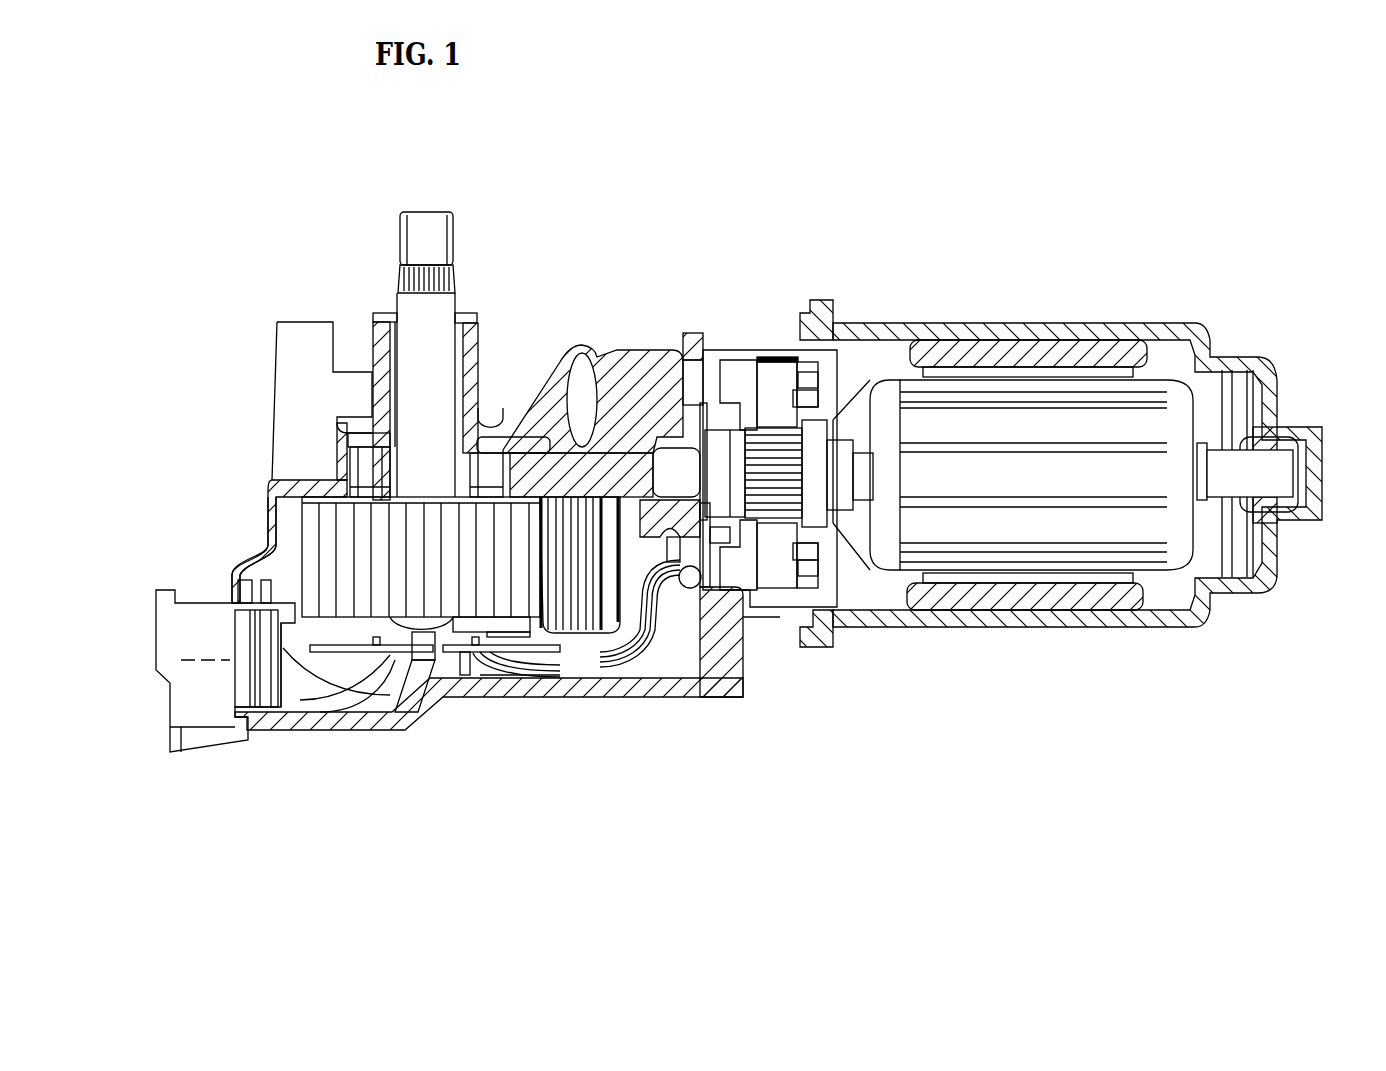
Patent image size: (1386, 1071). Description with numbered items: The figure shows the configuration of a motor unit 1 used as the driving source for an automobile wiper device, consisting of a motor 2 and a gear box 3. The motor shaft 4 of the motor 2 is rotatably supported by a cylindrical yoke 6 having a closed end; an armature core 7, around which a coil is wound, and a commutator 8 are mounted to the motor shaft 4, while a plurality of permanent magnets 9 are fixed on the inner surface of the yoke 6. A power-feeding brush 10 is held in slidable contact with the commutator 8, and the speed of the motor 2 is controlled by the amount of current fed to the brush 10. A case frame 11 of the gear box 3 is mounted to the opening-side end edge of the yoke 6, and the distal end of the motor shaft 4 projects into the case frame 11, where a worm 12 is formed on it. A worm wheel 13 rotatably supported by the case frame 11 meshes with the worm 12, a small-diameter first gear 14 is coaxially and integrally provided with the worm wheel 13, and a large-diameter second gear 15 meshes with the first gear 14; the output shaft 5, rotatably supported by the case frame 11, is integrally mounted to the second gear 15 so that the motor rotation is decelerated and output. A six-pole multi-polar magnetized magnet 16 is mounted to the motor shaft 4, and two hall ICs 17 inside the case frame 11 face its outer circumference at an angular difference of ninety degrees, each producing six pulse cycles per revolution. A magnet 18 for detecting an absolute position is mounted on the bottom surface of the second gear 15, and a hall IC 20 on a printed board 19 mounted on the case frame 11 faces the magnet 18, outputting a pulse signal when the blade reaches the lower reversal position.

The motor unit 1 is at (861, 268).
The motor 2 is at (1068, 320).
The gear box 3 is at (555, 350).
The motor shaft 4 is at (1218, 487).
The output shaft 5 is at (420, 305).
The yoke 6 is at (942, 322).
The armature core 7 is at (1075, 525).
The commutator 8 is at (795, 492).
The permanent magnets 9 is at (998, 595).
The brush 10 is at (773, 410).
The case frame 11 is at (714, 442).
The worm 12 is at (488, 470).
The worm wheel 13 is at (560, 350).
The first gear 14 is at (588, 612).
The second gear 15 is at (353, 543).
The multi-polar magnetized magnet 16 is at (723, 405).
The hall ICs 17 is at (700, 598).
The magnet for detecting an absolute position 18 is at (480, 655).
The printed board 19 is at (440, 668).
The hall IC 20 is at (522, 625).